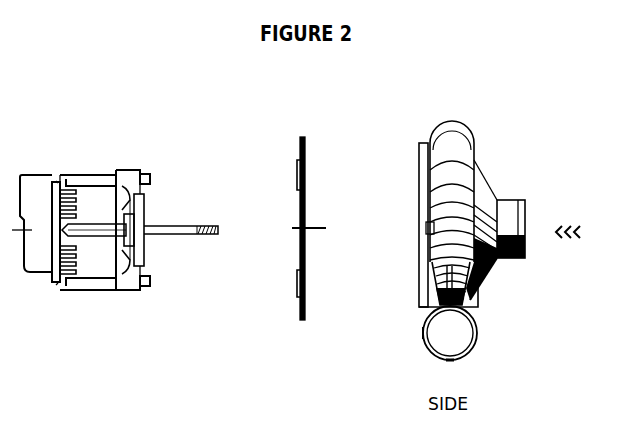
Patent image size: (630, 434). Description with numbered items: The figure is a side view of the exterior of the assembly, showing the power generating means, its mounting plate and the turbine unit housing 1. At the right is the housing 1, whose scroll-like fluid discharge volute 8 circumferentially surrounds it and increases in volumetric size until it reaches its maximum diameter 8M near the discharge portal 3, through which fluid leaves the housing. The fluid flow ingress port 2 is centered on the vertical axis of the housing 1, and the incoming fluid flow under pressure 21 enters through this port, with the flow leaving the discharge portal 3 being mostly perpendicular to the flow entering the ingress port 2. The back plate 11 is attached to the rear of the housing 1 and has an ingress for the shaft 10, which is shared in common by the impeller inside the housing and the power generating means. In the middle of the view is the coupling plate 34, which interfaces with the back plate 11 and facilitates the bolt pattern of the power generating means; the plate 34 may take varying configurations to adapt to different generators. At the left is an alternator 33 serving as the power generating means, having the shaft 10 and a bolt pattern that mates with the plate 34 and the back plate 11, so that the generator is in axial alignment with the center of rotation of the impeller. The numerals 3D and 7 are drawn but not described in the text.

The turbine unit housing 1 is at (474, 201).
The fluid flow ingress port 2 is at (526, 246).
The discharge portal 3 is at (478, 333).
The duct outlet 3D is at (431, 351).
The fan blades 7 is at (478, 196).
The fluid discharge volute 8 is at (452, 148).
The maximum diameter of volute 8M is at (450, 333).
The shaft 10 is at (190, 228).
The back plate 11 is at (419, 175).
The fluid flow under pressure 21 is at (584, 231).
The alternator 33 is at (81, 220).
The coupling plate 34 is at (309, 216).